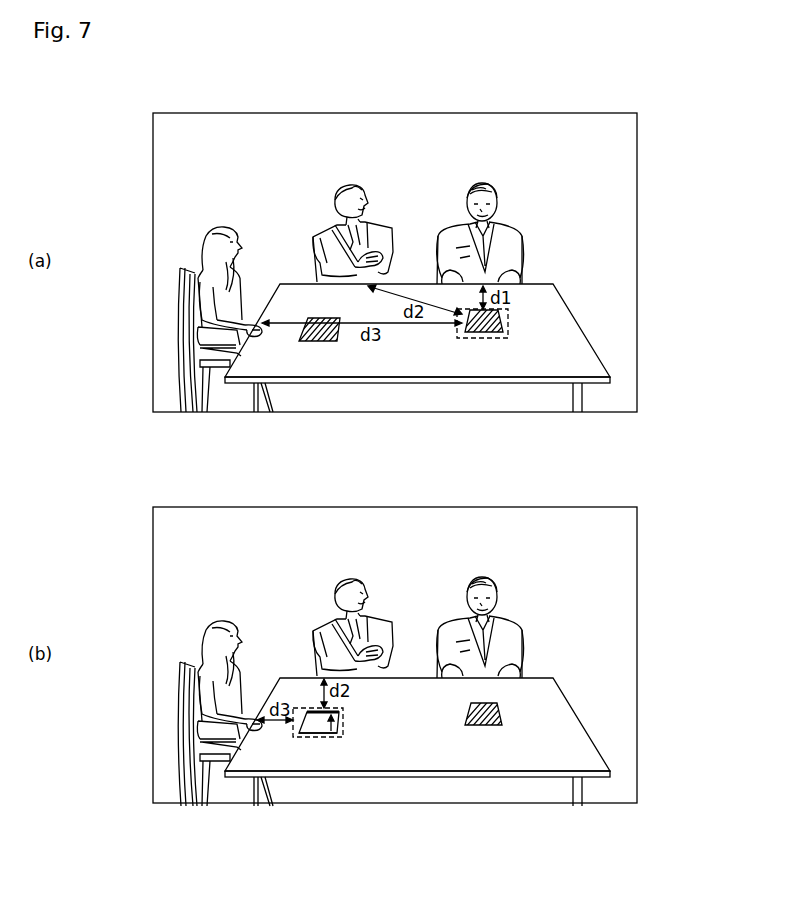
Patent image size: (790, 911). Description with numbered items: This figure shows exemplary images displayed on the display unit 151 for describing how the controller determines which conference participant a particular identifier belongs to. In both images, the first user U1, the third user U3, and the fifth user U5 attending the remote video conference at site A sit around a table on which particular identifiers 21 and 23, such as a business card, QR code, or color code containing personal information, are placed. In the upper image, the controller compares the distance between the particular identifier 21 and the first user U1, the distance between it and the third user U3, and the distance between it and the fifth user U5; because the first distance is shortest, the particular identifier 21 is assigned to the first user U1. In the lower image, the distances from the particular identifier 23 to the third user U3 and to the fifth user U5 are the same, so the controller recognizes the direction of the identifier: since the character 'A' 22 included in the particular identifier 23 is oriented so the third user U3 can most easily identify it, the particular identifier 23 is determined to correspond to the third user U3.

The display unit 151 is at (637, 138).
The first user U1 is at (510, 245).
The third user U3 is at (350, 186).
The fifth user U5 is at (205, 250).
The particular identifier 21 is at (505, 322).
The character 'A' 22 is at (322, 734).
The particular identifier 23 is at (308, 738).